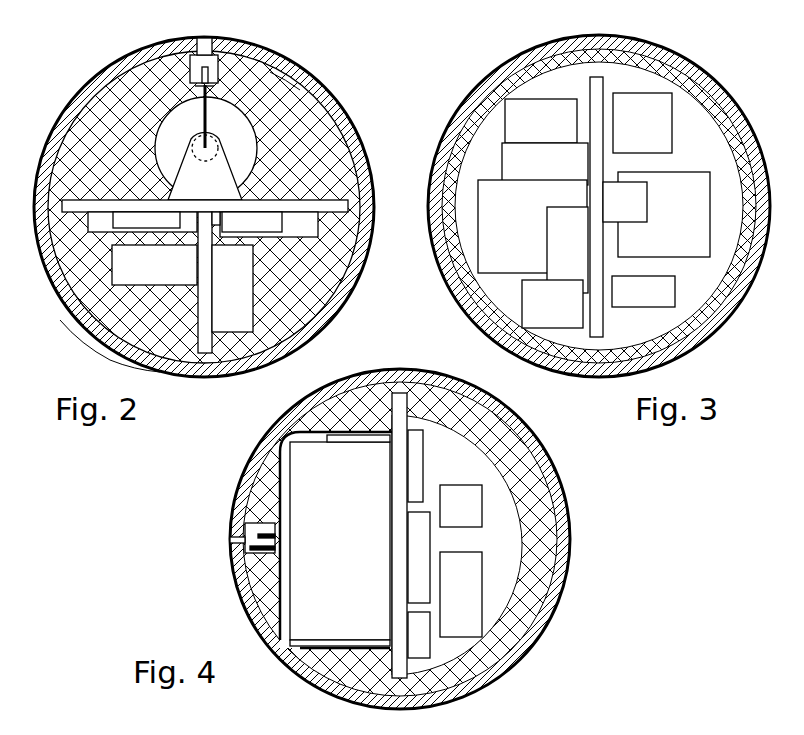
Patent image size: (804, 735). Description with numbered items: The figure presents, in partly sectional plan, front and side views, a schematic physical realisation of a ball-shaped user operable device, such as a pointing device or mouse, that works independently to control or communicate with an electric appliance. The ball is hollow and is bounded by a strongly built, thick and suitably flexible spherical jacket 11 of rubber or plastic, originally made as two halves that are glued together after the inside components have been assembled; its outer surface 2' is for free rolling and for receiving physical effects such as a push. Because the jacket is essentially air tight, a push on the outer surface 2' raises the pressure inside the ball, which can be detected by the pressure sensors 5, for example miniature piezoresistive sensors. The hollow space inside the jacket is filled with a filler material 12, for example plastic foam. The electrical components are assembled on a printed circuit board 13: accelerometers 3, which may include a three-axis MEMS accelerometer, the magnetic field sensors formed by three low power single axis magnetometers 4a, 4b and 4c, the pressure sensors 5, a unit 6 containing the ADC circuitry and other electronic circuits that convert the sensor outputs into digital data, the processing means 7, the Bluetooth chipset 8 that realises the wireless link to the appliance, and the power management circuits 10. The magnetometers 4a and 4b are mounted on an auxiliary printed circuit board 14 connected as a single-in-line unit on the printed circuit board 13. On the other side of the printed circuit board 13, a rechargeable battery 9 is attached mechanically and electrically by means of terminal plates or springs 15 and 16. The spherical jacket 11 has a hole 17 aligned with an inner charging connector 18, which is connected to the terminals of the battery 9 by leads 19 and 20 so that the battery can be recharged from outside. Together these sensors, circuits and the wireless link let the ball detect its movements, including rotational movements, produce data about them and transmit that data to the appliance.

In FIG. 2, the outer surface 2' is at (204, 207).
In FIG. 2, the accelerometers 3 is at (262, 227).
In FIG. 3, the accelerometers 3 is at (666, 226).
In FIG. 3, the single axis magnetometer 4a is at (559, 283).
In FIG. 4, the single axis magnetometer 4a is at (449, 605).
In FIG. 2, the single axis magnetometer 4b is at (143, 278).
In FIG. 3, the single axis magnetometer 4b is at (535, 173).
In FIG. 4, the single axis magnetometer 4b is at (449, 516).
In FIG. 2, the single axis magnetometer 4c is at (221, 290).
In FIG. 3, the single axis magnetometer 4c is at (614, 213).
In FIG. 3, the pressure sensors 5 is at (638, 301).
In FIG. 3, the unit 6 is at (543, 319).
In FIG. 4, the unit 6 is at (413, 644).
In FIG. 2, the processing means 7 is at (133, 222).
In FIG. 3, the processing means 7 is at (498, 246).
In FIG. 4, the processing means 7 is at (413, 567).
In FIG. 2, the Bluetooth chipset 8 is at (98, 333).
In FIG. 3, the Bluetooth chipset 8 is at (536, 131).
In FIG. 4, the Bluetooth chipset 8 is at (423, 465).
In FIG. 2, the rechargeable battery 9 is at (181, 143).
In FIG. 4, the rechargeable battery 9 is at (338, 503).
In FIG. 2, the power management circuits 10 is at (287, 236).
In FIG. 3, the power management circuits 10 is at (631, 137).
In FIG. 2, the spherical jacket 11 is at (140, 62).
In FIG. 2, the filler material 12 is at (105, 133).
In FIG. 2, the printed circuit board 13 is at (350, 190).
In FIG. 3, the printed circuit board 13 is at (687, 158).
In FIG. 2, the auxiliary printed circuit board 14 is at (127, 357).
In FIG. 3, the auxiliary printed circuit board 14 is at (605, 84).
In FIG. 4, the auxiliary printed circuit board 14 is at (463, 475).
In FIG. 2, the terminal plate or spring 15 is at (193, 193).
In FIG. 4, the terminal plate or spring 15 is at (330, 433).
In FIG. 4, the terminal plate or spring 16 is at (340, 673).
In FIG. 2, the hole 17 is at (200, 40).
In FIG. 4, the hole 17 is at (236, 534).
In FIG. 2, the charging connector 18 is at (222, 60).
In FIG. 4, the charging connector 18 is at (248, 520).
In FIG. 2, the lead 19 is at (270, 78).
In FIG. 4, the lead 19 is at (278, 452).
In FIG. 4, the lead 20 is at (245, 594).